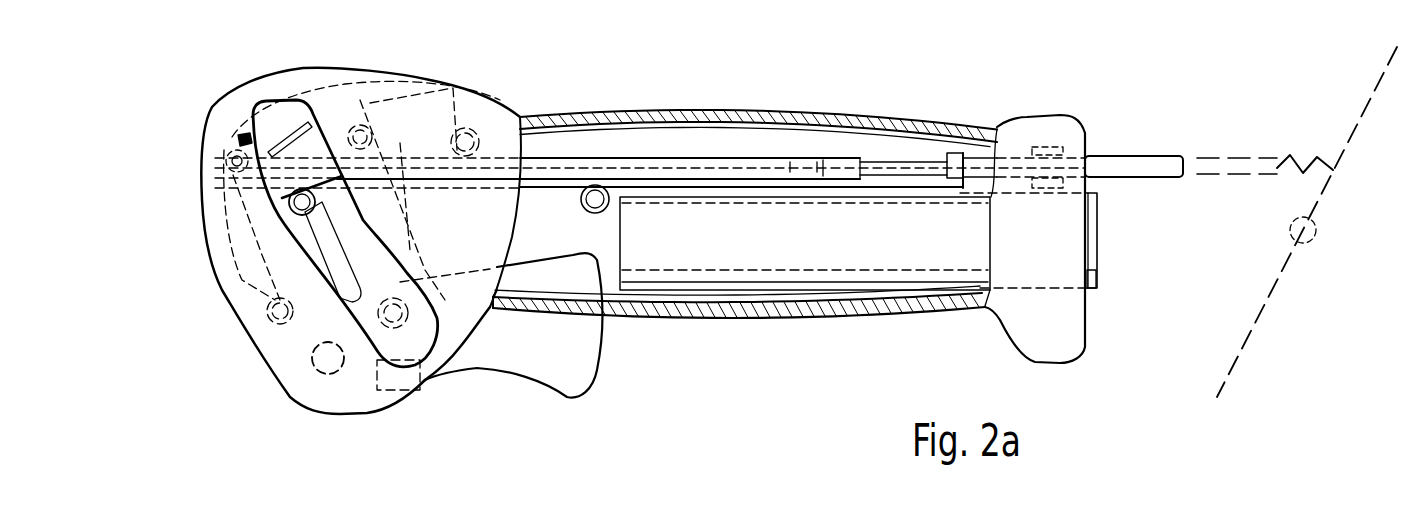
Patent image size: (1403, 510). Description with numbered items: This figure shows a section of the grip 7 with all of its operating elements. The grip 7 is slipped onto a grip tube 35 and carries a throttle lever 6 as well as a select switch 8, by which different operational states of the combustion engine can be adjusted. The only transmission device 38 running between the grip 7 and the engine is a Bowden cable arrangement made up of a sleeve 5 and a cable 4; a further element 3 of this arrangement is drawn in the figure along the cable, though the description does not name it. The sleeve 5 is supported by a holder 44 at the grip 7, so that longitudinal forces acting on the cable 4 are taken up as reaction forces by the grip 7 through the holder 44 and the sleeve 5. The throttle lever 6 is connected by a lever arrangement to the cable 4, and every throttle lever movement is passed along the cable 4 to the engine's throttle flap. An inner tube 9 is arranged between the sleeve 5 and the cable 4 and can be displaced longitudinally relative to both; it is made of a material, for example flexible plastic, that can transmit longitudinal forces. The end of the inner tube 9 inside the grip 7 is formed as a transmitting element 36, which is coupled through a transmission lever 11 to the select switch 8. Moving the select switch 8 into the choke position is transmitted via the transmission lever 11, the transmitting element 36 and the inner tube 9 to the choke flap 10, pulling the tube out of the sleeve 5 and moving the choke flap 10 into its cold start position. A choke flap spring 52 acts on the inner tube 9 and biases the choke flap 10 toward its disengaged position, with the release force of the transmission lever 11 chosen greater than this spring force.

The push rod 3 is at (846, 153).
The cable 4 is at (770, 163).
The sleeve 5 is at (1123, 156).
The throttle lever 6 is at (575, 365).
The grip 7 is at (722, 104).
The select switch 8 is at (240, 136).
The inner tube 9 is at (912, 162).
The choke flap 10 is at (1265, 303).
The transmission lever 11 is at (247, 292).
The grip tube 35 is at (1097, 260).
The transmitting element 36 is at (226, 158).
The transmission device 38 is at (979, 153).
The holder 44 is at (1046, 150).
The choke flap spring 52 is at (1293, 155).